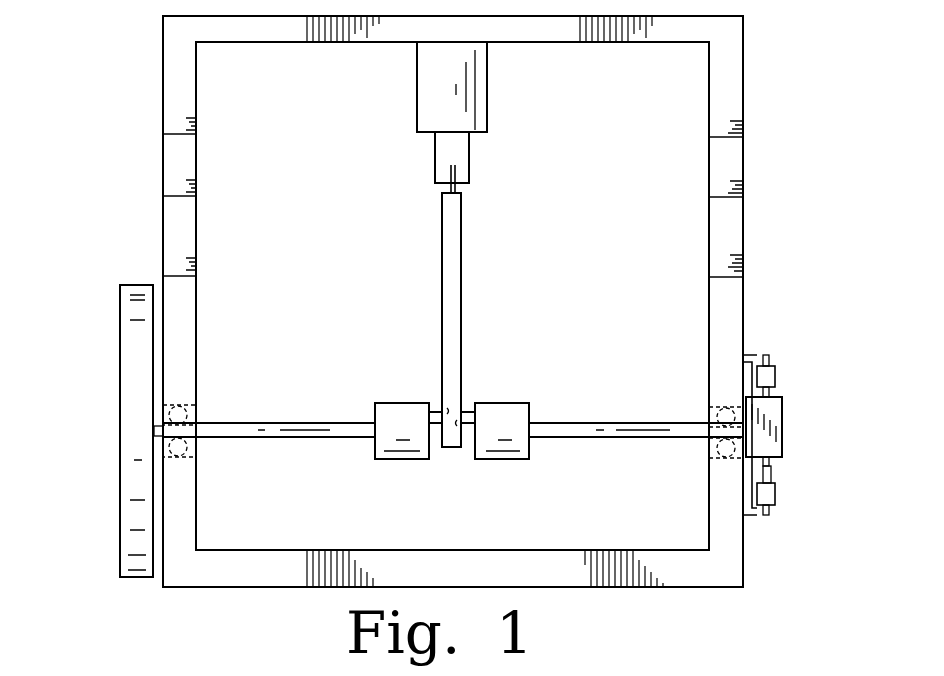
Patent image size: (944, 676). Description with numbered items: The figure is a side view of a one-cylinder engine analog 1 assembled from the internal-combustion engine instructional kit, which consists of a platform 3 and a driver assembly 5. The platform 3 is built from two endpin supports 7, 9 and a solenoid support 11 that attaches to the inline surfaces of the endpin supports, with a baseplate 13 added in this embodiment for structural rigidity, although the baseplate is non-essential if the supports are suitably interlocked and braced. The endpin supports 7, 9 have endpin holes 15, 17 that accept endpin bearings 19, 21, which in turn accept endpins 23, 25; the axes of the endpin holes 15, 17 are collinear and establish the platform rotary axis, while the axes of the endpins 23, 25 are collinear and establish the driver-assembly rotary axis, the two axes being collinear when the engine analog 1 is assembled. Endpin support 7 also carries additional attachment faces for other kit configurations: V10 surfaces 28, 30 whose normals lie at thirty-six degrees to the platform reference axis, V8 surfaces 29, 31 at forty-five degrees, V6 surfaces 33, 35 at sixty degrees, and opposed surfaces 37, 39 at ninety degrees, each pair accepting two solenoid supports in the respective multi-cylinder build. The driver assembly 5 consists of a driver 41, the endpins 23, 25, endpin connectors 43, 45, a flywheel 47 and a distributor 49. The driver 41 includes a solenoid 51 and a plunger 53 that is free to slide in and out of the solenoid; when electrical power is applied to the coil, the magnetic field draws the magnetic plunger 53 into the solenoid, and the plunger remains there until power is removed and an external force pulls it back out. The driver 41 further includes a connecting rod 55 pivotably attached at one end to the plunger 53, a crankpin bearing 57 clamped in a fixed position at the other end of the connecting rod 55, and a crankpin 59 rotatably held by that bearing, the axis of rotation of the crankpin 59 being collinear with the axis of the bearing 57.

The 1-cylinder engine analog 1 is at (70, 100).
The platform 3 is at (459, 298).
The driver assembly 5 is at (439, 244).
The endpin support 7 is at (652, 404).
The endpin support 9 is at (254, 431).
The solenoid support 11 is at (182, 30).
The baseplate 13 is at (724, 575).
The endpin hole 15 is at (716, 418).
The endpin hole 17 is at (189, 414).
The endpin bearing 19 is at (716, 452).
The endpin bearing 21 is at (188, 450).
The endpin 23 is at (594, 440).
The endpin 25 is at (314, 440).
The V10 surface 28 is at (719, 106).
The V8 surface 29 is at (722, 170).
The V10 surface 30 is at (182, 88).
The V8 surface 31 is at (182, 156).
The V6 surface 33 is at (726, 230).
The V6 surface 35 is at (184, 220).
The opposed surface 37 is at (726, 296).
The opposed surface 39 is at (184, 322).
The driver 41 is at (397, 309).
The endpin connector 43 is at (514, 459).
The endpin connector 45 is at (414, 459).
The flywheel 47 is at (116, 360).
The distributor 49 is at (802, 408).
The solenoid 51 is at (417, 80).
The plunger 53 is at (435, 148).
The connecting rod 55 is at (442, 268).
The crankpin bearing 57 is at (458, 408).
The crankpin 59 is at (440, 408).